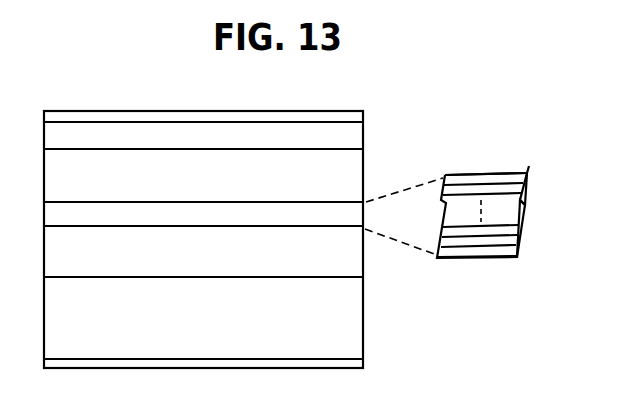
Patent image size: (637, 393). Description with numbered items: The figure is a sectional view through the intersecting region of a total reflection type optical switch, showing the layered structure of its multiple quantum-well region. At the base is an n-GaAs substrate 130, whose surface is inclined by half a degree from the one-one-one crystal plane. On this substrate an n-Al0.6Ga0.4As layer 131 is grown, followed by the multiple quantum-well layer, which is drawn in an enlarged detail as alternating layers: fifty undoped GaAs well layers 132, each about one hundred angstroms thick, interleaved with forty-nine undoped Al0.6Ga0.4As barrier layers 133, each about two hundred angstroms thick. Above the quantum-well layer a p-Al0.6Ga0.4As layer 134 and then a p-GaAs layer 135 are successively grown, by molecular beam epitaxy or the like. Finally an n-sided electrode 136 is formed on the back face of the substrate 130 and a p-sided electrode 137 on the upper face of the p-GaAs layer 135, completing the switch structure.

The n-GaAs substrate 130 is at (347, 315).
The n-Al0.6Ga0.4As layer 131 is at (348, 264).
The GaAs well layer 132 is at (517, 180).
The Al0.6Ga0.4As barrier layer 133 is at (515, 195).
The p-Al0.6Ga0.4As layer 134 is at (350, 180).
The p-GaAs layer 135 is at (353, 138).
The n-sided electrode 136 is at (347, 368).
The p-sided electrode 137 is at (362, 113).